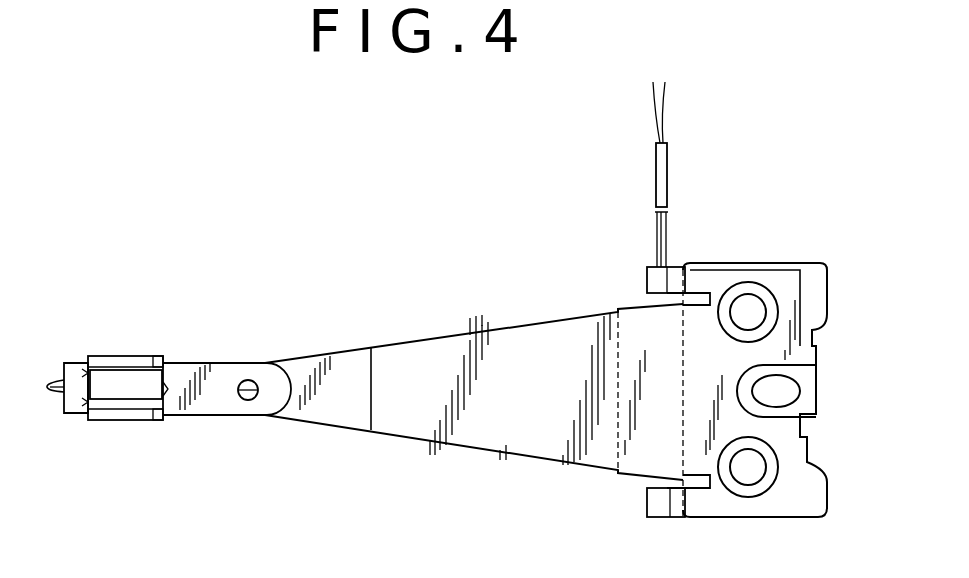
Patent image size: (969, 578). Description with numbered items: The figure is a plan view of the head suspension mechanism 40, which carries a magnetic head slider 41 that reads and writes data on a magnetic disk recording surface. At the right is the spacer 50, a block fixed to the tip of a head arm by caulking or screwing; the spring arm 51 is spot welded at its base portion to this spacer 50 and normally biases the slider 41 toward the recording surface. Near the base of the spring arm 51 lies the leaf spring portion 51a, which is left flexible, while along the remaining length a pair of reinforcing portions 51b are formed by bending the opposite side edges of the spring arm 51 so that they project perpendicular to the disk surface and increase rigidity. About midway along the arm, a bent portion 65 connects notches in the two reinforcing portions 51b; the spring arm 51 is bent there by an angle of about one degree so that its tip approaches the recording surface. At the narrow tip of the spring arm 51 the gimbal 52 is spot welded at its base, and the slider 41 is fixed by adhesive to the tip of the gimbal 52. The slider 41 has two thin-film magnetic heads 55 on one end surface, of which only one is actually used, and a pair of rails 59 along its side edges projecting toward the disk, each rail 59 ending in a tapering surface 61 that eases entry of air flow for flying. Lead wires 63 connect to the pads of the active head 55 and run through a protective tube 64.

The head suspension mechanism 40 is at (394, 316).
The magnetic head slider 41 is at (135, 378).
The spacer 50 is at (818, 262).
The spring arm 51 is at (472, 413).
The leaf spring portion 51a is at (641, 345).
The reinforcing portions 51b is at (470, 335).
The gimbal 52 is at (233, 372).
The thin-film magnetic heads 55 is at (86, 372).
The rails 59 is at (110, 358).
The tapering surface 61 is at (165, 357).
The lead wires 63 is at (52, 384).
The protective tube 64 is at (656, 175).
The bent portion 65 is at (372, 400).